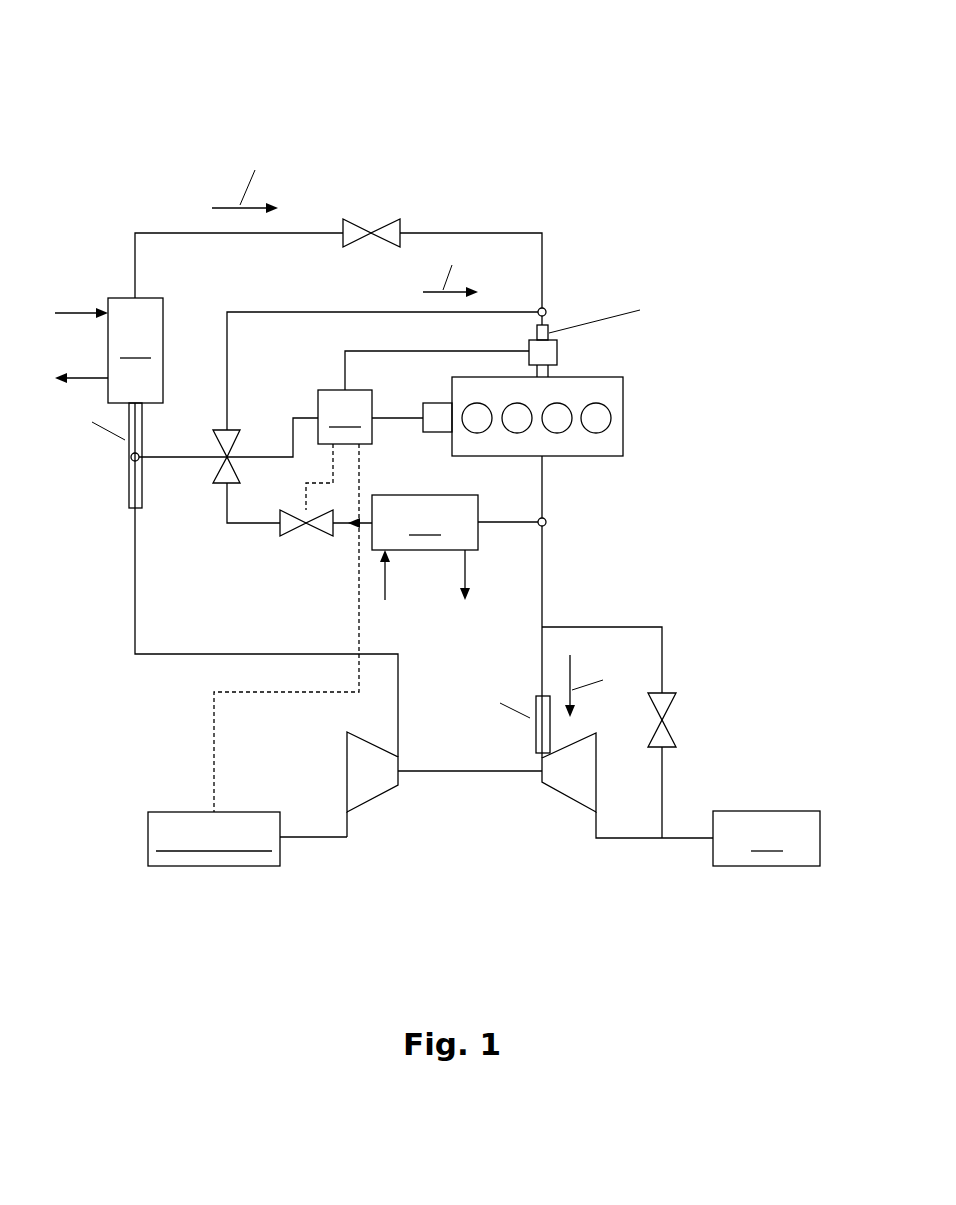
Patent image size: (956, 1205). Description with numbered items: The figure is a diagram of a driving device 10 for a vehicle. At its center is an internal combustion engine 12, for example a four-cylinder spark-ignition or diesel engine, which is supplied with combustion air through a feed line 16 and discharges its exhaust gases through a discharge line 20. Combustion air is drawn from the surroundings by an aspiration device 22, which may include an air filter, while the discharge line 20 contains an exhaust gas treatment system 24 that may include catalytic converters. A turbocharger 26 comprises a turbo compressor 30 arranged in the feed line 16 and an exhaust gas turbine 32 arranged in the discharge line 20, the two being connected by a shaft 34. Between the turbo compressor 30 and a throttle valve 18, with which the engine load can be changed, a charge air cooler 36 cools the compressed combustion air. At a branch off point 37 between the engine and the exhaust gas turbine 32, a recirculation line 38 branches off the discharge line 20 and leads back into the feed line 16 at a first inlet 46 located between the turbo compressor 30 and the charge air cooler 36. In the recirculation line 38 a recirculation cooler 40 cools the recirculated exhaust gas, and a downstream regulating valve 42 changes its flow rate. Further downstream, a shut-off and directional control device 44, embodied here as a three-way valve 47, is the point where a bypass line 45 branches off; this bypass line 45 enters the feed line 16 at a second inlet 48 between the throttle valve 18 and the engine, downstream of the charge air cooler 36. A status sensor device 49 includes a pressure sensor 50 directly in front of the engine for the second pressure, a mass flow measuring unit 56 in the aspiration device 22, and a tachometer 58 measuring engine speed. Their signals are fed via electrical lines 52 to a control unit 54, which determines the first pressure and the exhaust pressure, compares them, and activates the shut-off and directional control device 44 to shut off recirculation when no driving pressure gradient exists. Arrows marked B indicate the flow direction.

The driving device 10 is at (86, 86).
The internal combustion engine 12 is at (625, 405).
The feed line 16 is at (137, 252).
The throttle valve 18 is at (372, 233).
The discharge line 20 is at (546, 503).
The aspiration device 22 is at (247, 839).
The exhaust gas treatment system 24 is at (766, 838).
The turbocharger 26 is at (530, 859).
The turbo compressor 30 is at (370, 800).
The exhaust gas turbine 32 is at (570, 800).
The shaft 34 is at (475, 774).
The charge air cooler 36 is at (109, 350).
The branch off point 37 is at (548, 527).
The recirculation line 38 is at (185, 455).
The recirculation cooler 40 is at (425, 547).
The regulating valve 42 is at (305, 537).
The shut-off and directional control device 44 is at (225, 499).
The bypass line 45 is at (258, 315).
The first inlet 46 is at (130, 462).
The three-way valve 47 is at (220, 487).
The second inlet 48 is at (547, 308).
The status sensor device 49 is at (413, 582).
The pressure sensor 50 is at (559, 350).
The electrical lines 52 is at (260, 458).
The control unit 54 is at (423, 397).
The mass flow measuring unit 56 is at (247, 839).
The tachometer 58 is at (432, 437).